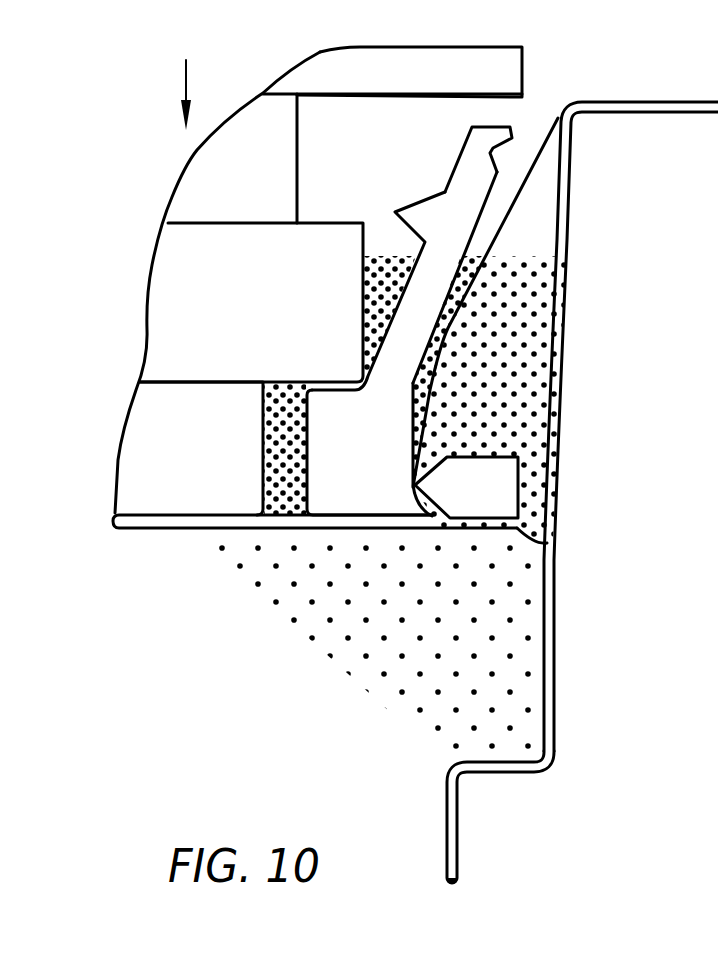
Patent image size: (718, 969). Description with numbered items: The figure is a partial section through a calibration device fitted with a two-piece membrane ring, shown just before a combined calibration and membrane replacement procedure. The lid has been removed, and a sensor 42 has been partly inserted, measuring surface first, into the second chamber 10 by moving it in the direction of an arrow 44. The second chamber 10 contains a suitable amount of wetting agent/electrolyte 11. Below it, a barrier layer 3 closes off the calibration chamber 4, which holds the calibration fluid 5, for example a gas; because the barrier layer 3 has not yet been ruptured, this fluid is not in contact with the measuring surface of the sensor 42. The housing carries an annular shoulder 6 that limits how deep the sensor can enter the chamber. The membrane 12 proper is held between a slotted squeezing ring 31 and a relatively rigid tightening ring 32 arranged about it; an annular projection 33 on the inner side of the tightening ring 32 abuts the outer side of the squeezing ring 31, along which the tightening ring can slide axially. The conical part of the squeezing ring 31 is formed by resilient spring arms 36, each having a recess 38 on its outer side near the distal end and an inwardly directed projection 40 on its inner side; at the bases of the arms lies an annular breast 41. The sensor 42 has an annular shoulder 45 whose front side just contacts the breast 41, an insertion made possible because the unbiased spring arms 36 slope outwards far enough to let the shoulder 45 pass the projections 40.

The barrier layer 3 is at (160, 530).
The calibration chamber 4 is at (532, 675).
The calibration fluid 5 is at (428, 647).
The annular shoulder 6 is at (488, 762).
The second chamber 10 is at (375, 162).
The wetting agent/electrolyte 11 is at (483, 370).
The membrane 12 is at (465, 300).
The squeezing ring 31 is at (398, 442).
The tightening ring 32 is at (517, 522).
The annular projection 33 is at (417, 488).
The spring arms 36 is at (467, 212).
The recess 38 is at (493, 153).
The projection 40 is at (417, 205).
The annular breast 41 is at (333, 392).
The sensor 42 is at (522, 72).
The arrow 44 is at (189, 77).
The annular shoulder 45 is at (167, 270).